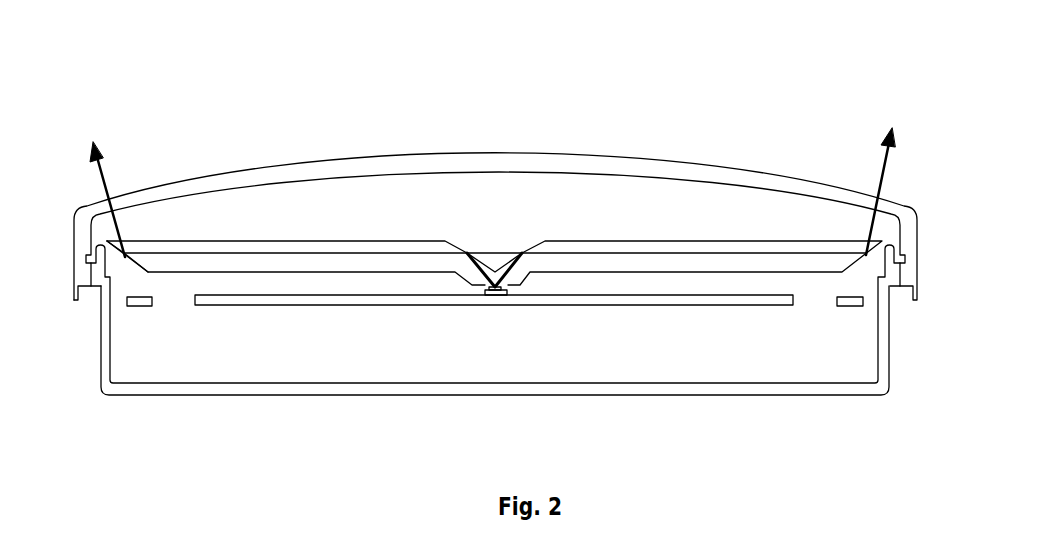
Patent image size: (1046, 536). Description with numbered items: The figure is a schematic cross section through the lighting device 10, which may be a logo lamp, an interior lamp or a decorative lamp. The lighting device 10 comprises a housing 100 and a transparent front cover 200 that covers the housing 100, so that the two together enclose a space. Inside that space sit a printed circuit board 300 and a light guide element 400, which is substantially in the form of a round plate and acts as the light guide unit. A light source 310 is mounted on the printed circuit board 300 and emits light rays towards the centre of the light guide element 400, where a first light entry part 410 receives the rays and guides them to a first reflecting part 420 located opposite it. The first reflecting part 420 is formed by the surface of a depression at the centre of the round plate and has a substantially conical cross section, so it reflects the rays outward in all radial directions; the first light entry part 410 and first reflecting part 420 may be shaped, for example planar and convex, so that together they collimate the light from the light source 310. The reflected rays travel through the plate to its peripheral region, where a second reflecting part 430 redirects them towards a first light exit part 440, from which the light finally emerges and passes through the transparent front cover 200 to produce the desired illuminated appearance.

The lighting device 10 is at (497, 121).
The housing 100 is at (862, 385).
The transparent front cover 200 is at (773, 178).
The printed circuit board 300 is at (715, 302).
The light source 310 is at (507, 293).
The light guide element 400 is at (615, 245).
The first light entry part 410 is at (477, 290).
The first reflecting part 420 is at (458, 243).
The second reflecting part 430 is at (132, 253).
The first light exit part 440 is at (128, 239).